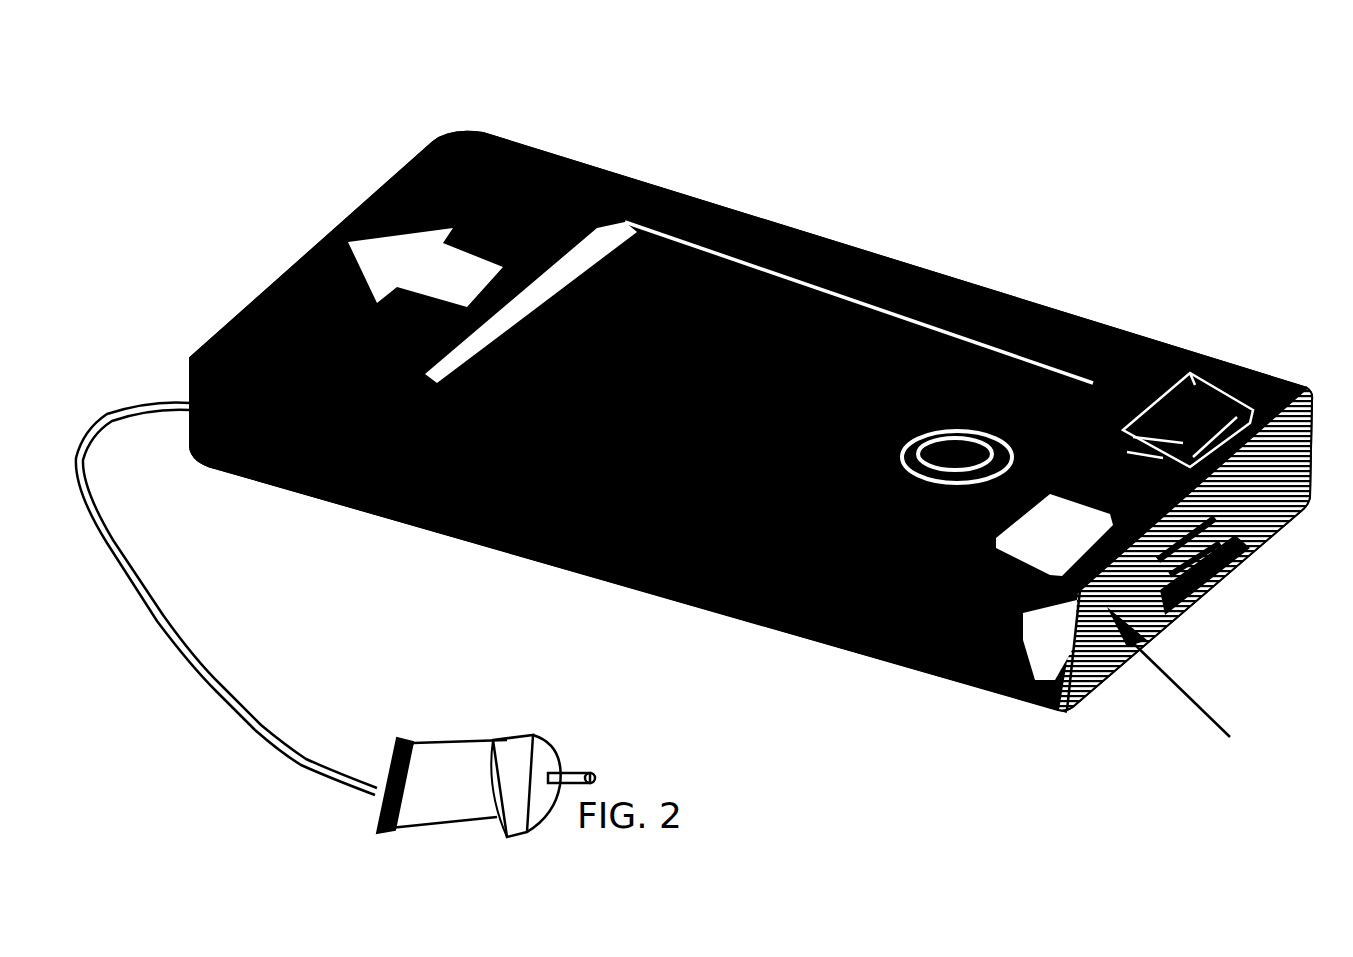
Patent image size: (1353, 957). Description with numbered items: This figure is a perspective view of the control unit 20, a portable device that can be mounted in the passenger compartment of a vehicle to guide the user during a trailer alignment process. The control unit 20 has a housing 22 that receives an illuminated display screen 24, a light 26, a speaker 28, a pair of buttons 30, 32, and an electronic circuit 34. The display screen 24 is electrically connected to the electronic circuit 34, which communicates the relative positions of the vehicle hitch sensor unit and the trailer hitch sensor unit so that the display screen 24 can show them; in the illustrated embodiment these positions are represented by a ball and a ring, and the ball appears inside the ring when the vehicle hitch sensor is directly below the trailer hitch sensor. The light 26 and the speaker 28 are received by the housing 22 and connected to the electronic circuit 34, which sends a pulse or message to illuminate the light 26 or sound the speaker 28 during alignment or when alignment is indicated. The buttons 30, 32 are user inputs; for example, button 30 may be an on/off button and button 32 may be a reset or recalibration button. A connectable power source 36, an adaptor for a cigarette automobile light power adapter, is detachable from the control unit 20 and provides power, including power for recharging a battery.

The control unit 20 is at (302, 117).
The housing 22 is at (220, 327).
The display screen 24 is at (700, 455).
The light 26 is at (413, 153).
The speaker 28 is at (1230, 557).
The button 30 is at (1067, 710).
The button 32 is at (1200, 353).
The electronic circuit 34 is at (356, 516).
The connectable power source 36 is at (367, 796).